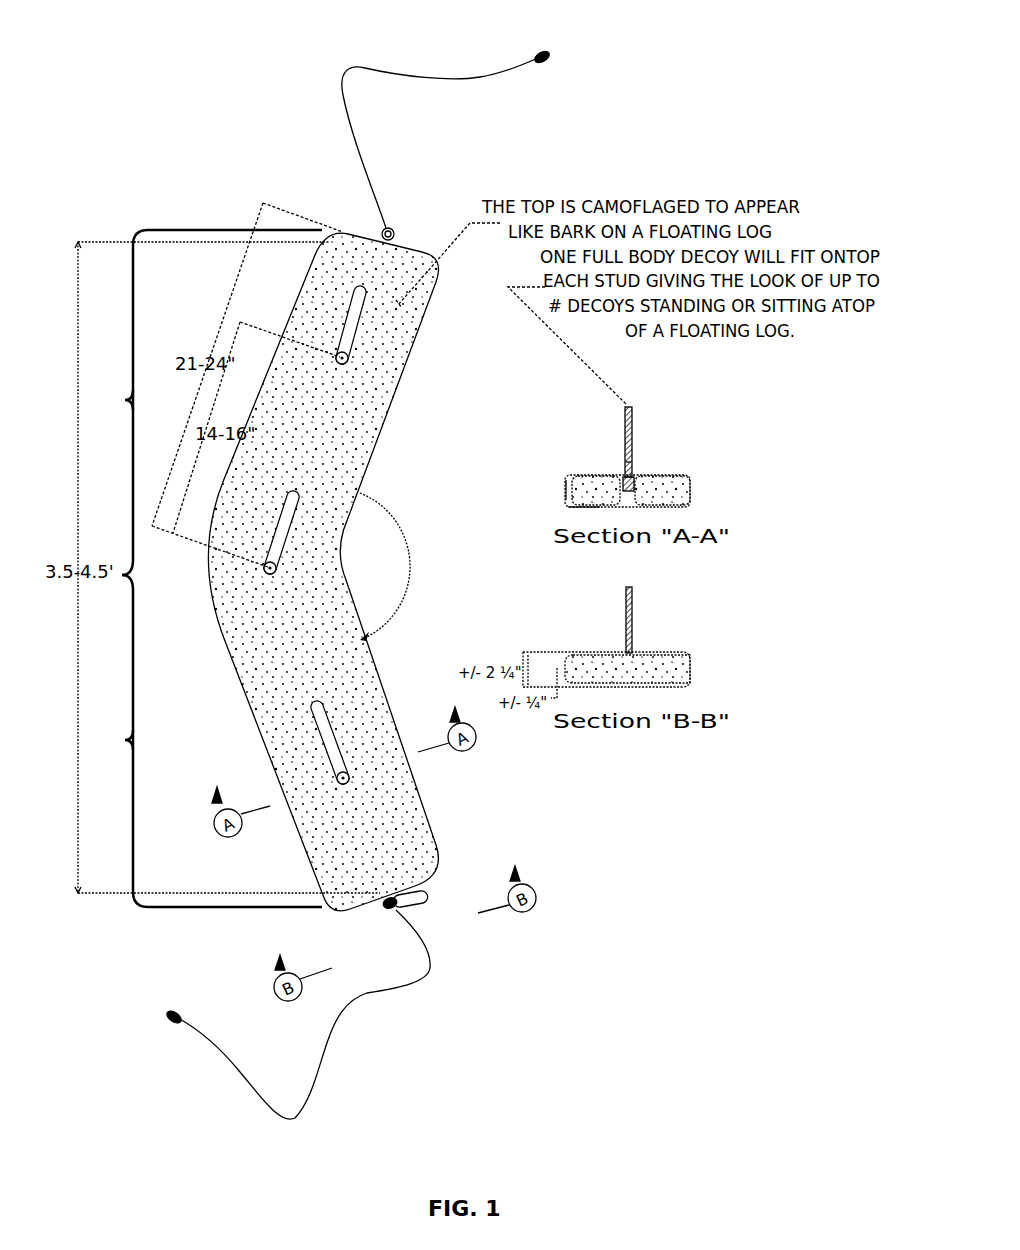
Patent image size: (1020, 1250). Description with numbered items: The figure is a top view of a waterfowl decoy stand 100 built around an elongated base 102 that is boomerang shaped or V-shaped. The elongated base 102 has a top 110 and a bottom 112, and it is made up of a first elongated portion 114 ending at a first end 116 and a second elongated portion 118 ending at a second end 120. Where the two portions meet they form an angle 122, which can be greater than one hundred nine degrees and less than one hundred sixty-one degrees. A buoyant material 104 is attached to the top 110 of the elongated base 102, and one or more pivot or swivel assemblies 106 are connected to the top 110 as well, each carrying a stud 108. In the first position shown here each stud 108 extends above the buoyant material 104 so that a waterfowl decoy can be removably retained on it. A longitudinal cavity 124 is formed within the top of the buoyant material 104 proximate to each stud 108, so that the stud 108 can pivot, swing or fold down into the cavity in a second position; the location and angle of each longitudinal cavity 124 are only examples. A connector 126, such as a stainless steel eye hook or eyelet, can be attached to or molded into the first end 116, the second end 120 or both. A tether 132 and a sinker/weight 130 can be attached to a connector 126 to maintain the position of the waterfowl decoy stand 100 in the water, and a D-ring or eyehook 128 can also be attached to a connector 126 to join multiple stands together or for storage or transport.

The waterfowl decoy stand 100 is at (439, 22).
The elongated base 102 is at (692, 505).
The buoyant material 104 is at (260, 662).
The pivot or swivel assembly 106 is at (635, 462).
The stud 108 is at (347, 361).
The top 110 is at (570, 489).
The bottom 112 is at (570, 513).
The first elongated portion 114 is at (206, 741).
The first end 116 is at (372, 914).
The second elongated portion 118 is at (206, 402).
The second end 120 is at (360, 226).
The angle 122 is at (394, 567).
The longitudinal cavity 124 is at (358, 325).
The connector 126 is at (394, 232).
The D-ring or eyehook 128 is at (399, 912).
The sinker/weight 130 is at (550, 66).
The tether 132 is at (350, 127).